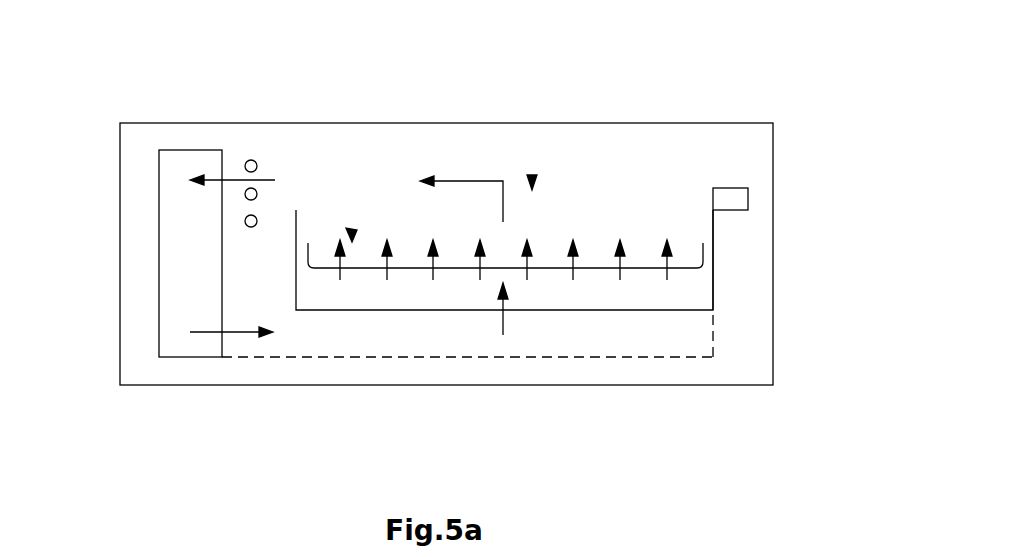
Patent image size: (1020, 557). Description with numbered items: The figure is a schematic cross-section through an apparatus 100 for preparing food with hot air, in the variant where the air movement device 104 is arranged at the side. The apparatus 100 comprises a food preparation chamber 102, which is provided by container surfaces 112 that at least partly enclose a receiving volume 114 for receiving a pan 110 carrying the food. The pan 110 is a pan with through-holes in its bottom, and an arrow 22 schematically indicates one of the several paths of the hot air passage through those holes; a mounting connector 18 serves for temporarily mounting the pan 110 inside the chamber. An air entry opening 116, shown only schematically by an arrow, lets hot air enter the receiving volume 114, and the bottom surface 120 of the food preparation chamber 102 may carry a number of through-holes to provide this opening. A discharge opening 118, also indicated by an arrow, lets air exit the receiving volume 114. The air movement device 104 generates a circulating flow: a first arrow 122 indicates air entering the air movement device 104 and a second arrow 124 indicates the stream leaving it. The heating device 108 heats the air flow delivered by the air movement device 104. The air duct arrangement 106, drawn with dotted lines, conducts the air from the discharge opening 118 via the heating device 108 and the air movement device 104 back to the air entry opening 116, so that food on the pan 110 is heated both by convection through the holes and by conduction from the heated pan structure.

The apparatus for preparing food 100 is at (776, 94).
The air movement device 104 is at (159, 287).
The heating device 108 is at (256, 160).
The first arrow 122 is at (218, 178).
The second arrow 124 is at (247, 334).
The air duct arrangement 106 is at (302, 358).
The bottom surface 120 is at (353, 311).
The arrow 22 is at (392, 272).
The food preparation chamber 102 is at (564, 217).
The air entry opening 116 is at (505, 336).
The discharge opening 118 is at (450, 181).
The pan 110 is at (532, 178).
The receiving volume 114 is at (352, 232).
The mounting connector 18 is at (730, 188).
The container surfaces 112 is at (713, 275).